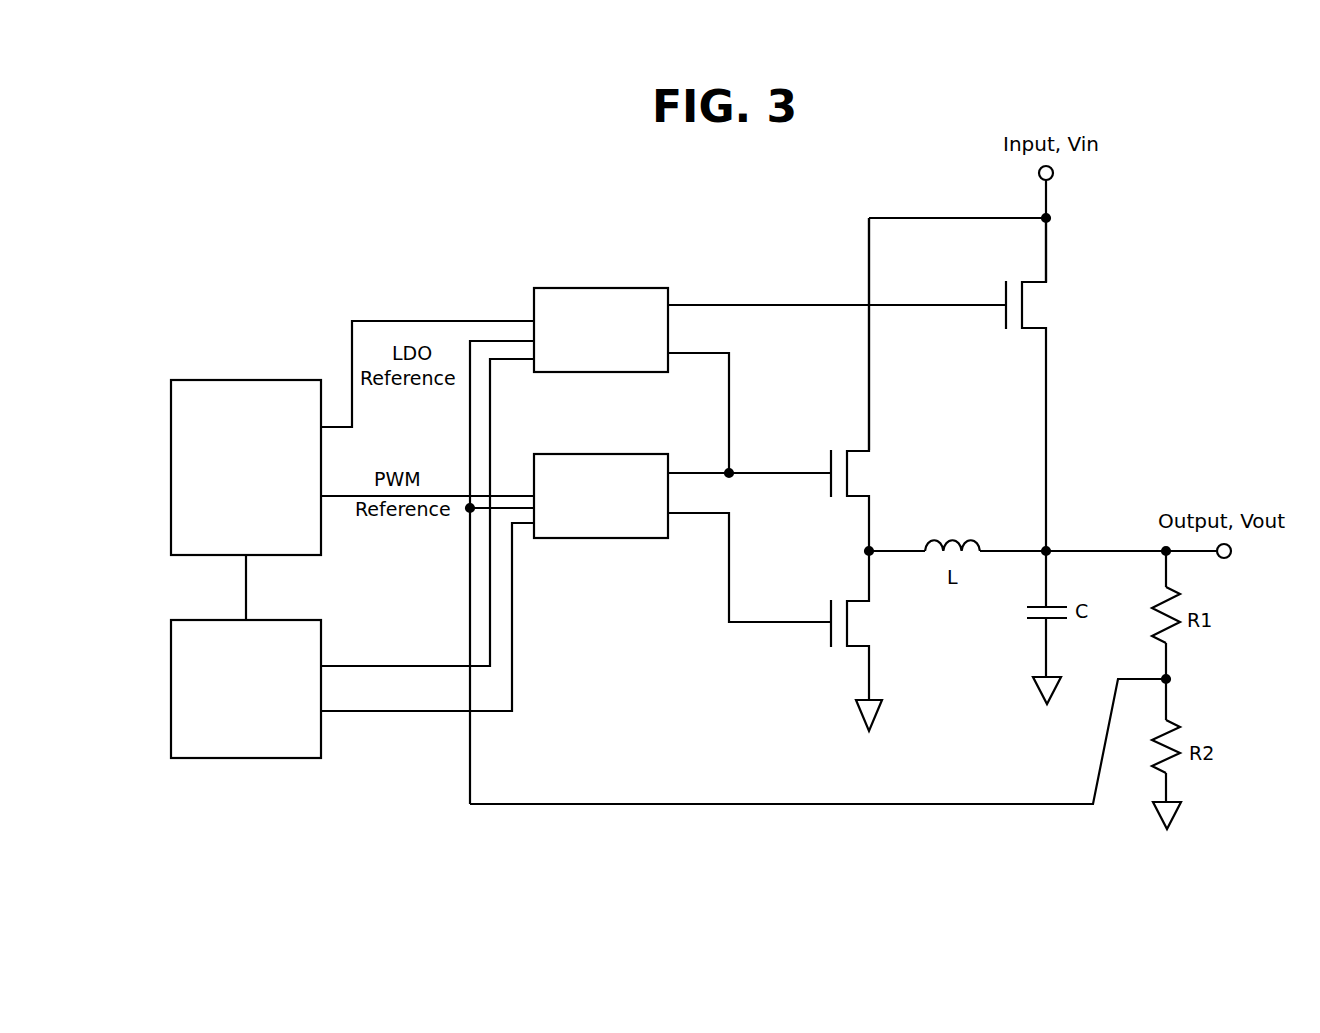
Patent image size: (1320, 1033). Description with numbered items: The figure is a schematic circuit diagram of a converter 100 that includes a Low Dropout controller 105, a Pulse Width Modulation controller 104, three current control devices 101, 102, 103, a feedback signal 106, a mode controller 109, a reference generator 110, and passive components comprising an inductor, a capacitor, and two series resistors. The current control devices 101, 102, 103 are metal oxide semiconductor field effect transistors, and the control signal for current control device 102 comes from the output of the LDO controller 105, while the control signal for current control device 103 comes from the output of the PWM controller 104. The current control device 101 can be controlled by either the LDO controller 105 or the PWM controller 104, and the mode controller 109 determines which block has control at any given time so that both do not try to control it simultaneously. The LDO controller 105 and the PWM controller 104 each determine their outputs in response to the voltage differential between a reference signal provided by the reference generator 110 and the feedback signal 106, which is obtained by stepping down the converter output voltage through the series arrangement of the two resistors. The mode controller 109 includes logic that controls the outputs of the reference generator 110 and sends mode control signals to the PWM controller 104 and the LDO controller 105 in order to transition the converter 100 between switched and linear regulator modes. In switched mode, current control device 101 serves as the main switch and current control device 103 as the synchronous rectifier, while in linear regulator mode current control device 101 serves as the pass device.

The converter 100 is at (908, 160).
The current control device 101 is at (878, 456).
The current control device 102 is at (1055, 281).
The current control device 103 is at (838, 652).
The Pulse Width Modulation controller 104 is at (592, 454).
The Low Dropout controller 105 is at (598, 288).
The feedback signal 106 is at (930, 806).
The mode controller 109 is at (258, 758).
The reference generator 110 is at (228, 380).